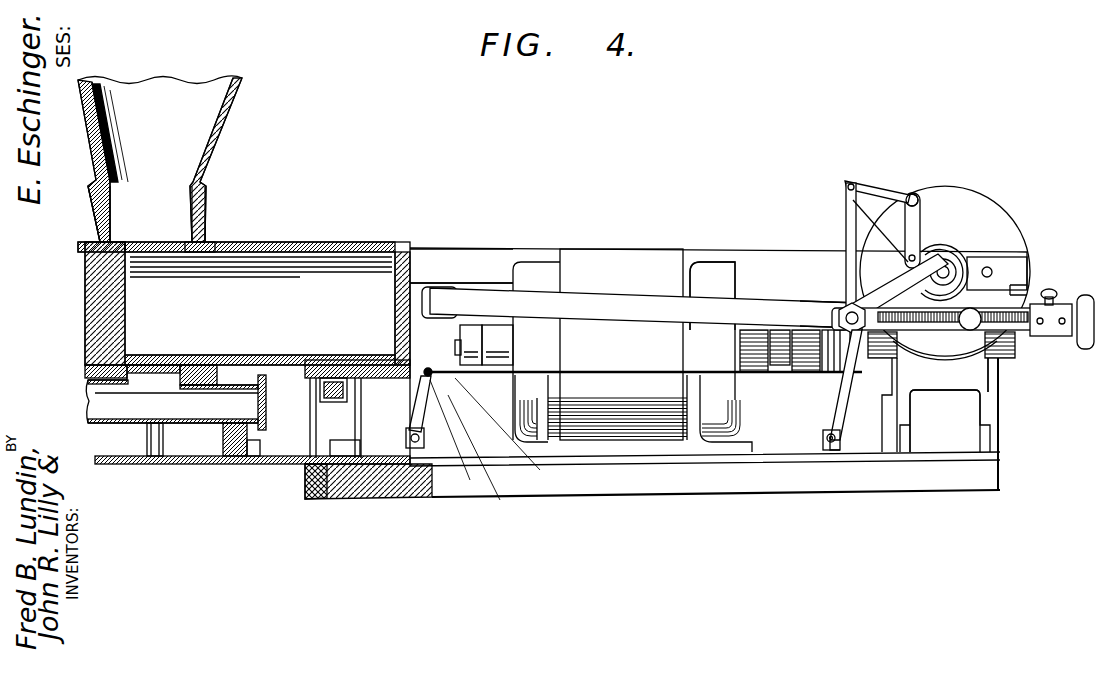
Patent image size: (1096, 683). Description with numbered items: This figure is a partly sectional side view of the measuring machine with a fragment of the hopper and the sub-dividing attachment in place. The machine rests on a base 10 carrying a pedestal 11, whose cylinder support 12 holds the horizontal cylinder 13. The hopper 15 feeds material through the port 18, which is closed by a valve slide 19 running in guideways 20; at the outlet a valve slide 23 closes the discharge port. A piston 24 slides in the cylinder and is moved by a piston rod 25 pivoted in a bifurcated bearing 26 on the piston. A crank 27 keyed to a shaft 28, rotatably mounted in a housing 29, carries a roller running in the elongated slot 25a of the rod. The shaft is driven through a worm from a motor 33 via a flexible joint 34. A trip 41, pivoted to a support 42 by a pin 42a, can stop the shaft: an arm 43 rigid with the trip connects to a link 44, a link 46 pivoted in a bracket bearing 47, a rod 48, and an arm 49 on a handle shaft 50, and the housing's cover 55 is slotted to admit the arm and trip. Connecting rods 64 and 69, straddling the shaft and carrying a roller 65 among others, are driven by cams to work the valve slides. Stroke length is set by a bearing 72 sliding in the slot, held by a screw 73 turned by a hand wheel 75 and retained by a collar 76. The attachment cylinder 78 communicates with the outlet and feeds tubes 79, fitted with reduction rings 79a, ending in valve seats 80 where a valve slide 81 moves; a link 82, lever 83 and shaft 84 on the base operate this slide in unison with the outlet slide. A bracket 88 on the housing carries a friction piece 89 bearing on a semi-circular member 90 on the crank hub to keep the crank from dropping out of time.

The base 10 is at (323, 498).
The pedestal 11 is at (434, 446).
The cylinder support 12 is at (416, 364).
The cylinder 13 is at (288, 250).
The hopper 15 is at (162, 94).
The port 18 is at (195, 244).
The valve slide 19 is at (165, 240).
The guideways 20 is at (92, 245).
The valve slide 23 is at (120, 358).
The piston 24 is at (300, 290).
The piston rod 25 is at (602, 312).
The elongated slot 25a is at (834, 308).
The bifurcated bearing 26 is at (438, 290).
The crank 27 is at (864, 294).
The shaft 28 is at (970, 262).
The housing 29 is at (963, 261).
The motor 33 is at (583, 275).
The flexible joint 34 is at (852, 334).
The trip 41 is at (868, 234).
The support 42 is at (918, 236).
The pin 42a is at (915, 198).
The arm 43 is at (864, 186).
The link 44 is at (845, 206).
The link 46 is at (840, 420).
The bracket bearing 47 is at (832, 450).
The rod 48 is at (458, 380).
The arm 49 is at (450, 396).
The shaft 50 is at (422, 440).
The cover 55 is at (992, 266).
The connecting rod 64 is at (694, 252).
The roller 65 is at (330, 388).
The connecting rod 69 is at (498, 284).
The bearing 72 is at (1000, 358).
The screw 73 is at (977, 366).
The hand wheel 75 is at (1084, 349).
The collar 76 is at (1042, 336).
The cylinder 78 is at (115, 406).
The tubes 79 is at (146, 442).
The reduction rings 79a is at (160, 462).
The valve seats 80 is at (258, 464).
The valve slide 81 is at (210, 464).
The link 82 is at (322, 499).
The lever 83 is at (365, 466).
The shaft 84 is at (345, 396).
The bracket 88 is at (1014, 292).
The friction piece 89 is at (1036, 264).
The semi-circular member 90 is at (948, 266).